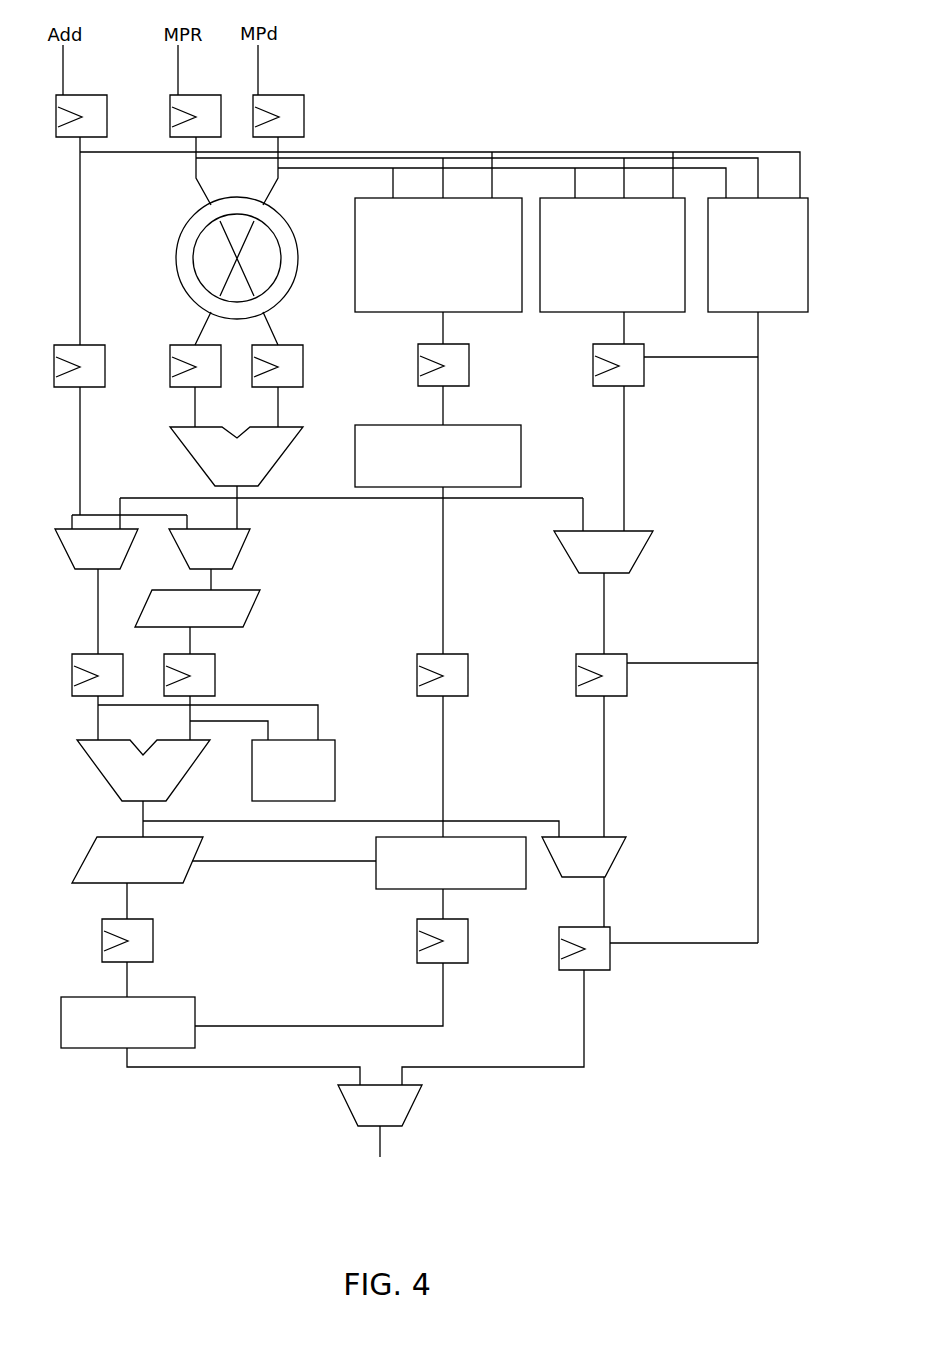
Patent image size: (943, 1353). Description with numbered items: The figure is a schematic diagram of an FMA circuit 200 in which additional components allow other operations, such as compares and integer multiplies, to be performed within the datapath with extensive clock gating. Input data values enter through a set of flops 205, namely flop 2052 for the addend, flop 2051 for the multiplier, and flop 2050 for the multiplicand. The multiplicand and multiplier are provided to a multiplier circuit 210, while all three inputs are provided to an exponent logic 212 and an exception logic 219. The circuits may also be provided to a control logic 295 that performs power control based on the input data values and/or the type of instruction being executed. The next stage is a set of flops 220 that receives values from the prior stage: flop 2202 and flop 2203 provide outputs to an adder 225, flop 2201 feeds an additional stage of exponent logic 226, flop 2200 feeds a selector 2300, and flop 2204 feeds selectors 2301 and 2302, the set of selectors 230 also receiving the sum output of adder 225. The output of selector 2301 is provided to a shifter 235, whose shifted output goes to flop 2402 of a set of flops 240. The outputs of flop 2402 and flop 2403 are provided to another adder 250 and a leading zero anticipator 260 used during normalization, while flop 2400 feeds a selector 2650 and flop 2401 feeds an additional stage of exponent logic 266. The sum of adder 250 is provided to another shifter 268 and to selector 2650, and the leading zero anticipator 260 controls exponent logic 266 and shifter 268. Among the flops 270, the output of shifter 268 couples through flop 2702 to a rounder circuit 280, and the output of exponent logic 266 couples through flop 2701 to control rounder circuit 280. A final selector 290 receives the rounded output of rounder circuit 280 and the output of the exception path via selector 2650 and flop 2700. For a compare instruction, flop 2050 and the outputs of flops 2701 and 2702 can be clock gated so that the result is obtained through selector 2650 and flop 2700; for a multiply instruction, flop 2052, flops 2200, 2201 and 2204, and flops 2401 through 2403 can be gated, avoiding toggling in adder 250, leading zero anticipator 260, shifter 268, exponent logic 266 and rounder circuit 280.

The FMA circuit 200 is at (629, 38).
The set of flops 205 is at (192, 101).
The flop 2052 is at (72, 94).
The flop 2051 is at (183, 94).
The flop 2050 is at (266, 94).
The multiplier circuit 210 is at (185, 233).
The exponent logic 212 is at (424, 276).
The exception logic 219 is at (598, 287).
The control logic 295 is at (744, 287).
The set of flops 220 is at (406, 437).
The flop 2204 is at (87, 388).
The flop 2203 is at (185, 388).
The flop 2202 is at (303, 360).
The flop 2201 is at (469, 365).
The flop 2200 is at (644, 370).
The adder 225 is at (278, 462).
The exponent logic 226 is at (521, 457).
The selectors 230 is at (354, 591).
The selector 2302 is at (128, 549).
The selector 2301 is at (243, 549).
The selector 2300 is at (585, 561).
The shifter 235 is at (253, 607).
The set of flops 240 is at (406, 745).
The flop 2403 is at (72, 700).
The flop 2402 is at (215, 665).
The flop 2401 is at (468, 671).
The flop 2400 is at (627, 671).
The adder circuit 250 is at (193, 763).
The leading zero anticipator 260 is at (335, 763).
The selector 2650 is at (615, 858).
The exponent logic 266 is at (437, 882).
The shifter 268 is at (183, 878).
The flops 270 is at (430, 1002).
The flop 2702 is at (153, 943).
The flop 2701 is at (468, 950).
The flop 2700 is at (610, 954).
The rounder circuit 280 is at (114, 1045).
The final selector 290 is at (412, 1107).